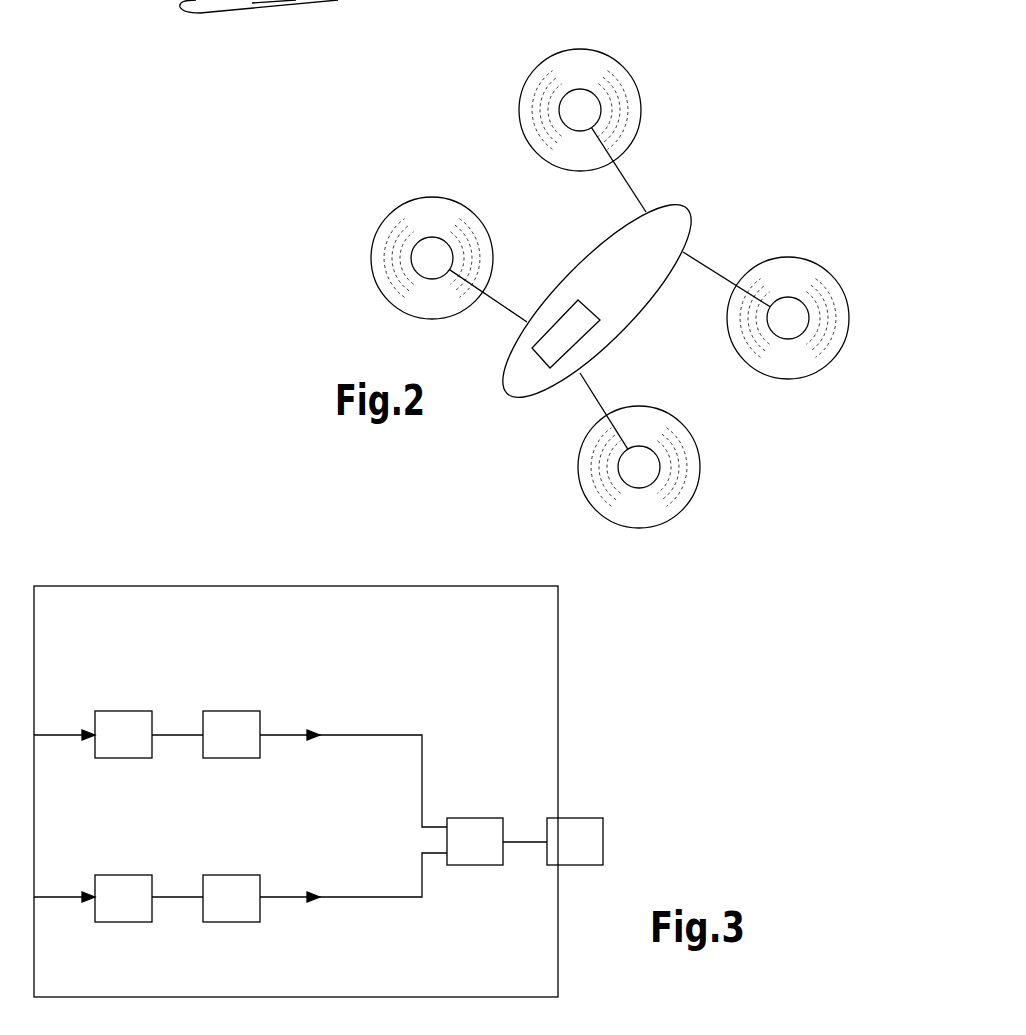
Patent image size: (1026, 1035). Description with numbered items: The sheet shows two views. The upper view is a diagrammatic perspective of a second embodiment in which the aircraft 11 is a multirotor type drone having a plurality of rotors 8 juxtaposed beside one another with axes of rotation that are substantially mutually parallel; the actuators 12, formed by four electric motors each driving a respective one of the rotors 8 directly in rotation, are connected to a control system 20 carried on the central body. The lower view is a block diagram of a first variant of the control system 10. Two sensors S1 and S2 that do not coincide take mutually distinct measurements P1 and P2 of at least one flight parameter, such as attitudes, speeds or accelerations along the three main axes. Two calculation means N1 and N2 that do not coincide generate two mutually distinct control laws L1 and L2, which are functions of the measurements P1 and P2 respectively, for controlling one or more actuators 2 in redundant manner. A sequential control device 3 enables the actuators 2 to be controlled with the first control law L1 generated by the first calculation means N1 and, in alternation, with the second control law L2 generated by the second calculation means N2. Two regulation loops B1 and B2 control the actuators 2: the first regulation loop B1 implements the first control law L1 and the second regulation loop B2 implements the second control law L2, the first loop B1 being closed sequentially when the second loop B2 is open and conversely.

In FIG. 2, the aircraft 11 is at (770, 190).
In FIG. 2, the rotors 8 is at (380, 267).
In FIG. 2, the actuators 12 is at (432, 237).
In FIG. 2, the control system 20 is at (537, 358).
In FIG. 3, the control system 10 is at (319, 751).
In FIG. 3, the sequential control device 3 is at (465, 828).
In FIG. 3, the actuators 2 is at (572, 828).
In FIG. 3, the first regulation loop B1 is at (168, 586).
In FIG. 3, the second regulation loop B2 is at (457, 997).
In FIG. 3, the first sensor S1 is at (120, 725).
In FIG. 3, the second sensor S2 is at (120, 887).
In FIG. 3, the first calculation means N1 is at (240, 725).
In FIG. 3, the second calculation means N2 is at (240, 887).
In FIG. 3, the first measurement P1 is at (177, 720).
In FIG. 3, the second measurement P2 is at (177, 882).
In FIG. 3, the first control law L1 is at (353, 765).
In FIG. 3, the second control law L2 is at (353, 877).